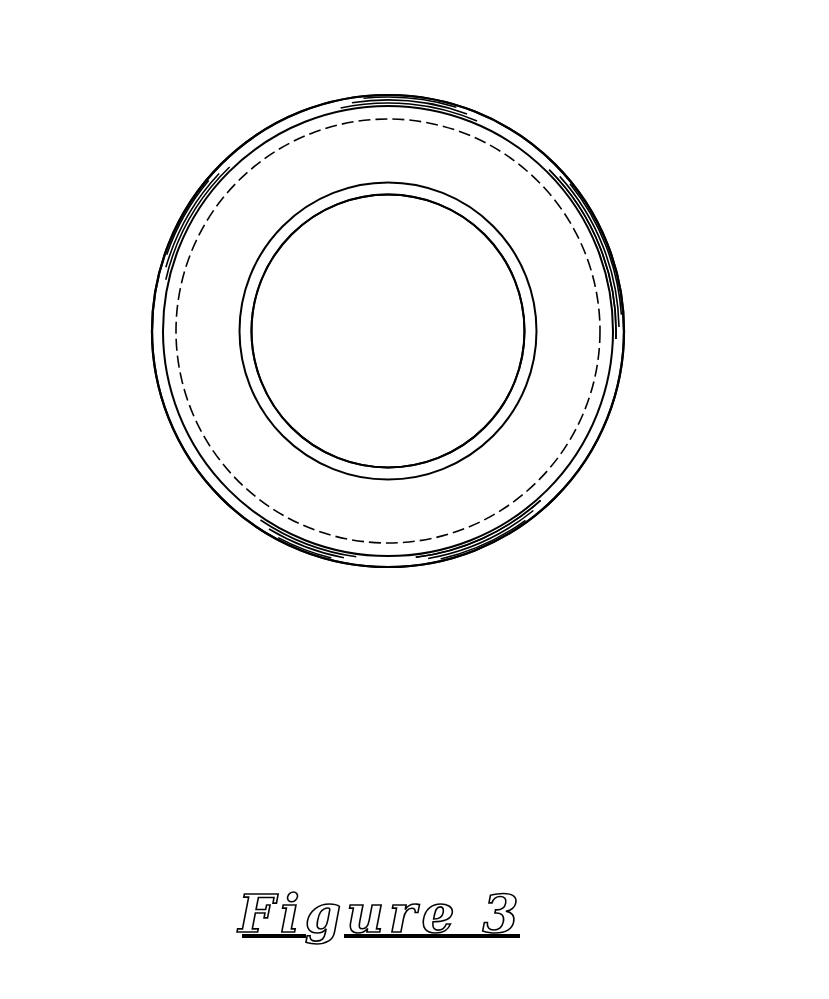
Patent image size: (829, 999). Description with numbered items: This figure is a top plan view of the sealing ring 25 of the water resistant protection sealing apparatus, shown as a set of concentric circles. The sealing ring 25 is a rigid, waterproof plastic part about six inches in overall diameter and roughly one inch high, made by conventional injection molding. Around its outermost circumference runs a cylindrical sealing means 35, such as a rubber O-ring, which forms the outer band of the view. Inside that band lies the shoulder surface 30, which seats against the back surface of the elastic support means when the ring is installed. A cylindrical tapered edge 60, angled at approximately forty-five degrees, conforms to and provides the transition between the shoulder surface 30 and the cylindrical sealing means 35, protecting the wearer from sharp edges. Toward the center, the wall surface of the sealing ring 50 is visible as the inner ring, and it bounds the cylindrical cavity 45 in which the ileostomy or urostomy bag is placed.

The sealing ring 25 is at (565, 573).
The shoulder surface 30 is at (537, 232).
The cylindrical sealing means 35 is at (223, 163).
The cylindrical cavity 45 is at (367, 378).
The wall surface of the sealing ring 50 is at (267, 403).
The cylindrical tapered edge 60 is at (558, 455).